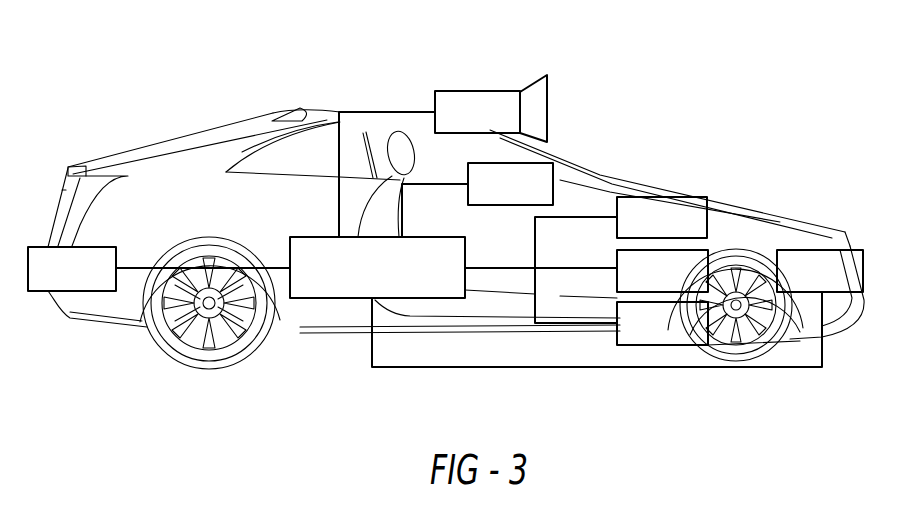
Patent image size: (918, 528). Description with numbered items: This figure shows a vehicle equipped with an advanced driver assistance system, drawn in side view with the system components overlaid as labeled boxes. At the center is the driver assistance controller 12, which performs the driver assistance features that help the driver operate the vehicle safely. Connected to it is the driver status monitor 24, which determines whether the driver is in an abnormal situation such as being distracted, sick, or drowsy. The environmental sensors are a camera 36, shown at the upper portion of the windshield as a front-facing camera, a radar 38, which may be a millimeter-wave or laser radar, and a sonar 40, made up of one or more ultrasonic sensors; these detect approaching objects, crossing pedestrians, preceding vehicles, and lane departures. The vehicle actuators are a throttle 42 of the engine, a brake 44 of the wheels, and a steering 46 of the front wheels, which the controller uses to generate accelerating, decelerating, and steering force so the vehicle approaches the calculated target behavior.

The driver assistance controller 12 is at (328, 298).
The driver status monitor (DSM) 24 is at (575, 174).
The camera 36 is at (470, 90).
The radar 38 is at (812, 250).
The sonar 40 is at (45, 291).
The throttle 42 is at (665, 197).
The brake 44 is at (709, 292).
The steering 46 is at (737, 306).